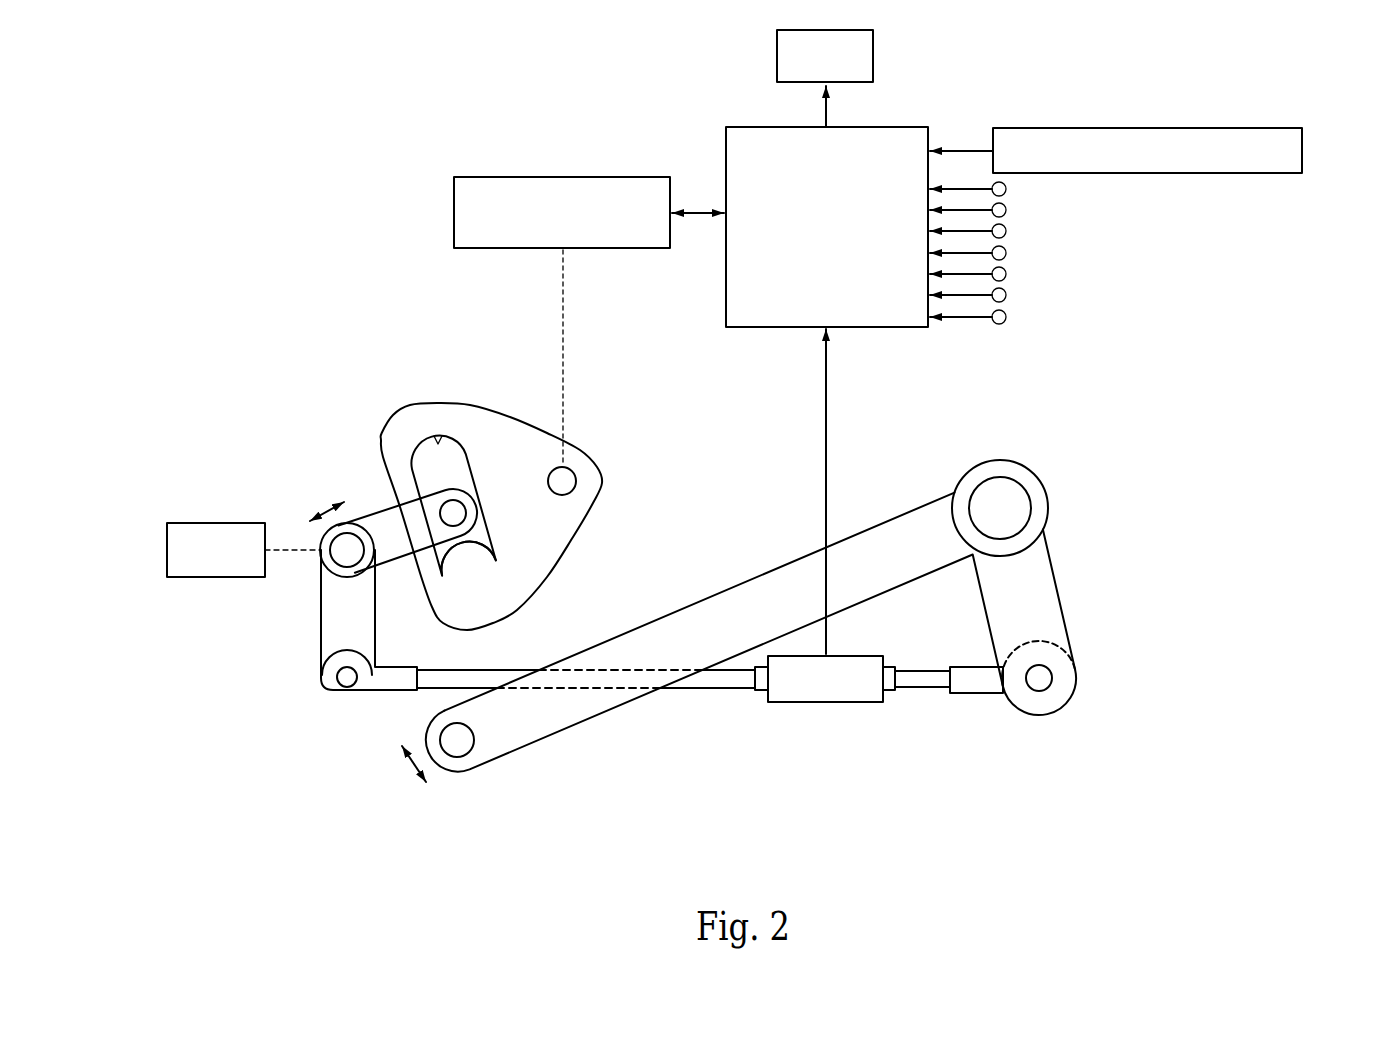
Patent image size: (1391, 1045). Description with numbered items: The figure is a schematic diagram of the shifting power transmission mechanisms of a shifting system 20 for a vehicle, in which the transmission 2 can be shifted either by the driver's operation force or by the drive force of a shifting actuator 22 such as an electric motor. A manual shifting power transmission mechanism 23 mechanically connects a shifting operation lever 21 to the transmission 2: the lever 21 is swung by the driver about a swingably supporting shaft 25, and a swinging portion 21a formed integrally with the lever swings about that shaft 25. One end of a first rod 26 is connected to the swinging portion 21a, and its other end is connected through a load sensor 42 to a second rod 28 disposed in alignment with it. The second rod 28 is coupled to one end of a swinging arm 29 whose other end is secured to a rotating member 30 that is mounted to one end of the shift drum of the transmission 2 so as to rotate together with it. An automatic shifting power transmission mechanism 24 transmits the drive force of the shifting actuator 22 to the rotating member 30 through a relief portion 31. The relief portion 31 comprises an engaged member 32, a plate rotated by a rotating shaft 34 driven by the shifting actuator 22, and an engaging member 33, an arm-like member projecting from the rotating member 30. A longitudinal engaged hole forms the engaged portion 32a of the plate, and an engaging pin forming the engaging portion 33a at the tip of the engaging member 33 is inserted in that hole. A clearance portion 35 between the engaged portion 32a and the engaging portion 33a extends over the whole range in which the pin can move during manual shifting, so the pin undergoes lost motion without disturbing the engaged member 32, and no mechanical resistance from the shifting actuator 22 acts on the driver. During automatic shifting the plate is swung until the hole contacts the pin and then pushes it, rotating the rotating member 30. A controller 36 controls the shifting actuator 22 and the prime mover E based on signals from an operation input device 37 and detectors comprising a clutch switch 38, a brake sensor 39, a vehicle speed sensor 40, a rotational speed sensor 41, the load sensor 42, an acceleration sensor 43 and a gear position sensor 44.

The prime mover E is at (878, 52).
The transmission 2 is at (164, 551).
The shifting system 20 is at (358, 320).
The shifting operation lever 21 is at (552, 740).
The swinging portion 21a is at (1047, 603).
The shifting actuator 22 is at (604, 176).
The manual shifting power transmission mechanism 23 is at (735, 723).
The automatic shifting power transmission mechanism 24 is at (427, 328).
The swingably supporting shaft 25 is at (1017, 508).
The first rod 26 is at (925, 690).
The second rod 28 is at (713, 690).
The swinging arm 29 is at (320, 620).
The rotating member 30 is at (343, 558).
The relief portion 31 is at (408, 422).
The engaged member 32 is at (578, 541).
The engaged portion 32a is at (440, 437).
The engaging member 33 is at (378, 505).
The engaging portion 33a is at (450, 510).
The rotating shaft 34 is at (568, 481).
The clearance portion 35 is at (485, 543).
The controller 36 is at (766, 330).
The operation input device 37 is at (1303, 150).
The clutch switch 38 is at (1006, 189).
The brake sensor 39 is at (1006, 210).
The vehicle speed sensor 40 is at (1006, 231).
The rotational speed sensor 41 is at (1006, 253).
The load sensor 42 is at (1006, 274).
The acceleration sensor 43 is at (1006, 295).
The gear position sensor 44 is at (1006, 317).